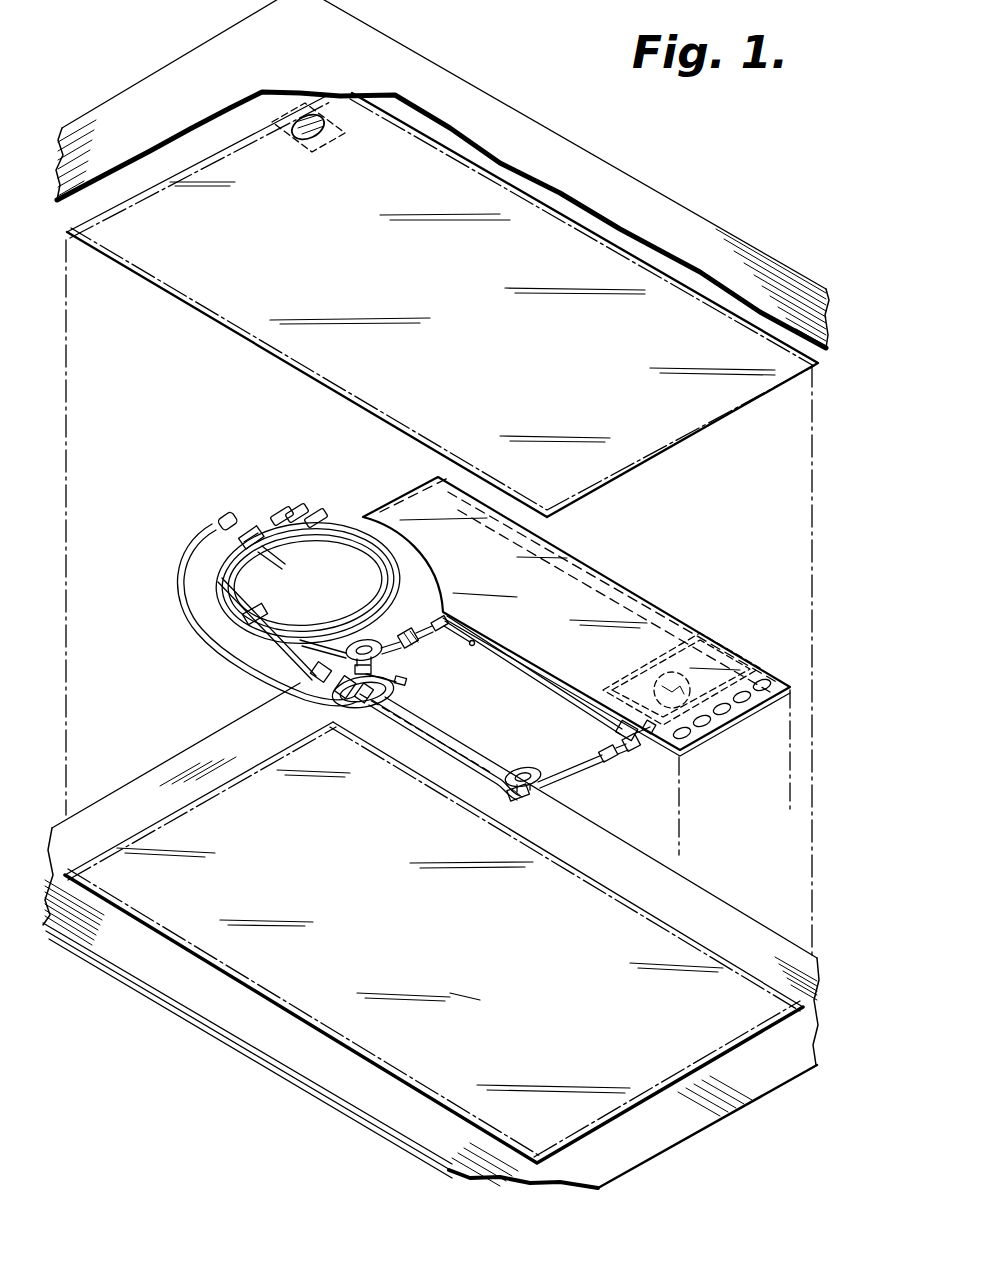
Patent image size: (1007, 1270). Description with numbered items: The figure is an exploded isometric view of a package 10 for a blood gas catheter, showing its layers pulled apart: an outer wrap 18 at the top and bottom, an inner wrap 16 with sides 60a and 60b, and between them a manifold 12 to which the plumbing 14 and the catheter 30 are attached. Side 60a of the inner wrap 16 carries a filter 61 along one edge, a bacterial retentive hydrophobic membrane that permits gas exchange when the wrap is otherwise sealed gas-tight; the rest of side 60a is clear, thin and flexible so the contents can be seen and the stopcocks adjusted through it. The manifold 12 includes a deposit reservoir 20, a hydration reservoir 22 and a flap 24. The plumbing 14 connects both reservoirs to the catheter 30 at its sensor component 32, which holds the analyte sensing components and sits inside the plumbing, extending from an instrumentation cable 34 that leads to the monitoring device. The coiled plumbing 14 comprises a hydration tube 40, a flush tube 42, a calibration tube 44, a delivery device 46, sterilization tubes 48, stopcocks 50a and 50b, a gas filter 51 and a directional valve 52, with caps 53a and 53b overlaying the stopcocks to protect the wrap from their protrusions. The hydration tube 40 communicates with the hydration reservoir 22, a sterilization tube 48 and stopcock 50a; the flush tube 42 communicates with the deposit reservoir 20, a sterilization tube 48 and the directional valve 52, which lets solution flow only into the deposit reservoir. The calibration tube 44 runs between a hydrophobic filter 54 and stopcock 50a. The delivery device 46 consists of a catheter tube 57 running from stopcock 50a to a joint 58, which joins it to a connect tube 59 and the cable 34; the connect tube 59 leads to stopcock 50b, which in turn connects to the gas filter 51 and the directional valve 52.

The package 10 is at (686, 162).
The manifold 12 is at (570, 580).
The plumbing 14 is at (698, 812).
The inner wrap 16 is at (280, 327).
The outer wrap 18 is at (442, 98).
The deposit reservoir 20 is at (613, 593).
The hydration reservoir 22 is at (705, 660).
The flap 24 is at (747, 685).
The catheter 30 is at (202, 604).
The sensor component 32 is at (390, 770).
The instrumentation cable 34 is at (232, 560).
The hydration tube 40 is at (596, 765).
The flush tube 42 is at (487, 622).
The calibration tube 44 is at (215, 630).
The delivery device 46 is at (455, 748).
The sterilization tubes 48 is at (594, 717).
The stopcock 50a is at (535, 776).
The stopcock 50b is at (338, 636).
The gas filter 51 is at (404, 686).
The directional valve 52 is at (420, 641).
The cap 53a is at (566, 786).
The cap 53b is at (437, 628).
The filter 54 is at (240, 512).
The catheter tube 57 is at (500, 778).
The joint 58 is at (338, 703).
The connect tube 59 is at (318, 680).
The side 60a is at (175, 300).
The side 60b is at (400, 1045).
The filter 61 is at (300, 140).